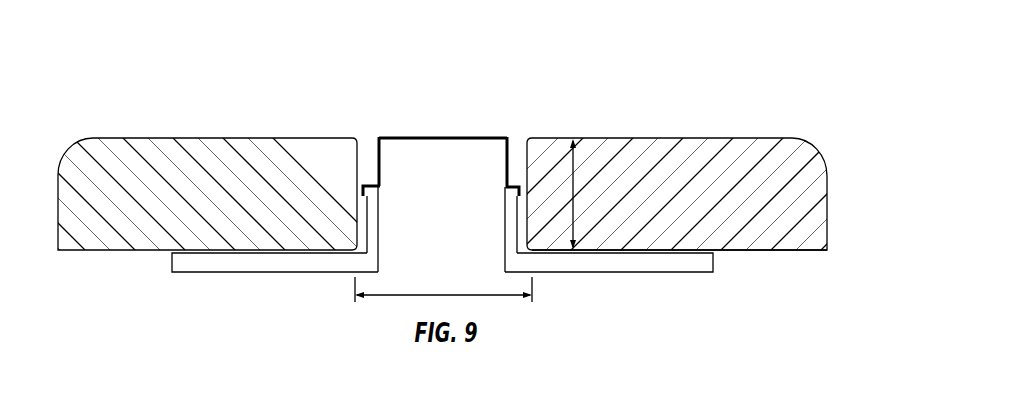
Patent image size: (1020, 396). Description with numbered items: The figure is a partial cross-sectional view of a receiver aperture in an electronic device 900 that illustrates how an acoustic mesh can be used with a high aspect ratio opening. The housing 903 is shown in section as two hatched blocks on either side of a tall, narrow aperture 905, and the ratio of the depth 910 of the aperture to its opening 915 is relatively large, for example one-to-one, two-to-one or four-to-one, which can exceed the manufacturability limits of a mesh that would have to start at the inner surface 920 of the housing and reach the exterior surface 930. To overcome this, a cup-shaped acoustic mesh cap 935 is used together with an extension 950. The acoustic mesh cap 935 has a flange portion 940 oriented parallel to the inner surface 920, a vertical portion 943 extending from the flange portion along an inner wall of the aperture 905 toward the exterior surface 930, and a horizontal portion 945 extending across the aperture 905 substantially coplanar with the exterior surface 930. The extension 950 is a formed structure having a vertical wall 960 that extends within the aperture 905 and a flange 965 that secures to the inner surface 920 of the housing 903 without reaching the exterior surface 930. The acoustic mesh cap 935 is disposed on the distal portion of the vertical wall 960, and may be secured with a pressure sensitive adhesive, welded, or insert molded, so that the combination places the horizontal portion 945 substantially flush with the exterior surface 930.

The electronic device 900 is at (760, 50).
The housing 903 is at (80, 150).
The aperture 905 is at (427, 219).
The depth 910 is at (575, 195).
The opening 915 is at (418, 295).
The inner surface 920 is at (741, 253).
The exterior surface 930 is at (746, 137).
The acoustic mesh cap 935 is at (412, 137).
The flange portion 940 is at (364, 183).
The vertical portion 943 is at (508, 156).
The horizontal portion 945 is at (445, 137).
The extension 950 is at (612, 262).
The vertical wall 960 is at (370, 229).
The flange 965 is at (250, 262).